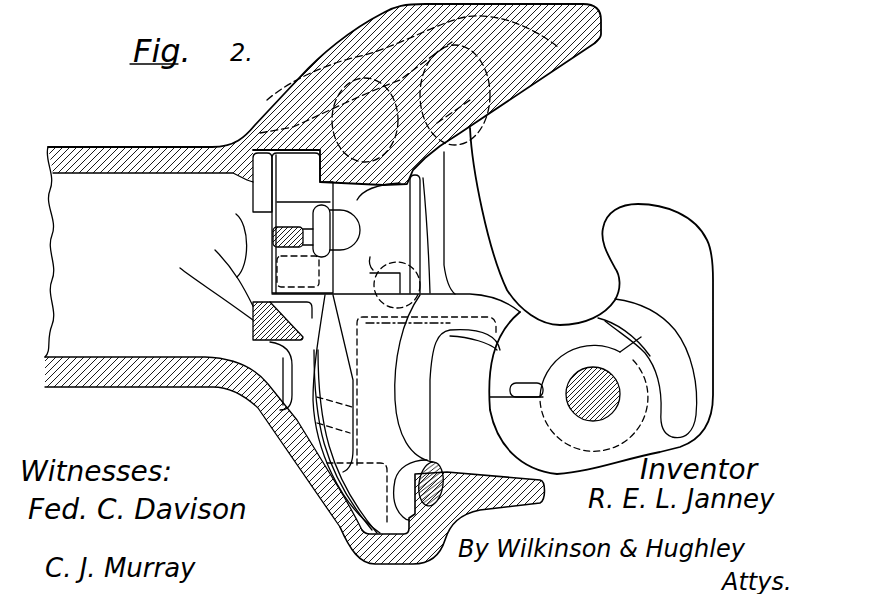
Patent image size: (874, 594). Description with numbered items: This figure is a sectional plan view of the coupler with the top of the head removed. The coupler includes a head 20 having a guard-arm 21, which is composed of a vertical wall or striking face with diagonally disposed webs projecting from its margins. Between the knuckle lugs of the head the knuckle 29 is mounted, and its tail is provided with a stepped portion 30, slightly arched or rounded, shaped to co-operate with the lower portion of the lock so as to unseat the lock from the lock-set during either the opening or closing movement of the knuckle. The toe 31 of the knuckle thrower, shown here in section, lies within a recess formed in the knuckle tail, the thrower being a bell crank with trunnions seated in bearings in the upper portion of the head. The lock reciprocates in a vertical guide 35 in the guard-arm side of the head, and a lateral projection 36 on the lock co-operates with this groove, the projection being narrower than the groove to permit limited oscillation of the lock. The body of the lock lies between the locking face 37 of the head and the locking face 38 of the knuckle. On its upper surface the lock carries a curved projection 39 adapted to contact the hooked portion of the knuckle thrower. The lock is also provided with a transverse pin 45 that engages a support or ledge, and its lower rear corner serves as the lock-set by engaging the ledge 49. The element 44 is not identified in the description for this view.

The head 20 is at (509, 346).
The guard-arm 21 is at (543, 67).
The knuckle 29 is at (569, 394).
The stepped portion 30 is at (352, 328).
The toe 31 is at (465, 465).
The vertical guide 35 is at (292, 148).
The lateral projection 36 is at (266, 153).
The locking face 37 is at (400, 207).
The locking face 38 is at (362, 290).
The curved projection 39 is at (388, 245).
The pin 44 is at (273, 237).
The transverse pin 45 is at (328, 230).
The ledge 49 is at (253, 199).